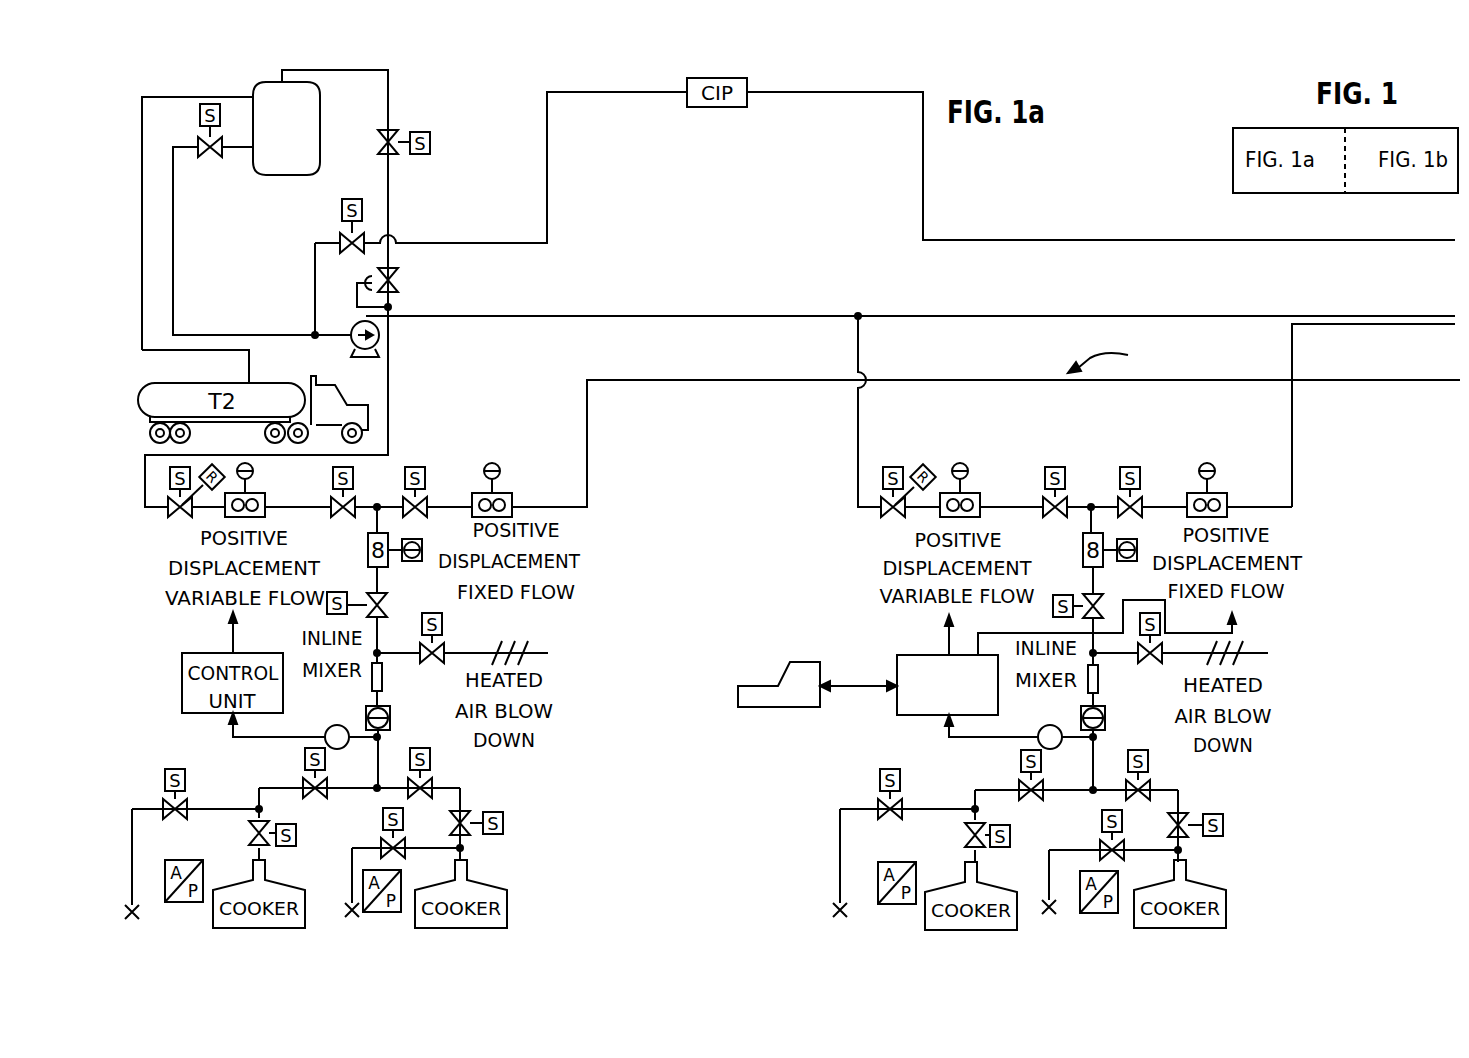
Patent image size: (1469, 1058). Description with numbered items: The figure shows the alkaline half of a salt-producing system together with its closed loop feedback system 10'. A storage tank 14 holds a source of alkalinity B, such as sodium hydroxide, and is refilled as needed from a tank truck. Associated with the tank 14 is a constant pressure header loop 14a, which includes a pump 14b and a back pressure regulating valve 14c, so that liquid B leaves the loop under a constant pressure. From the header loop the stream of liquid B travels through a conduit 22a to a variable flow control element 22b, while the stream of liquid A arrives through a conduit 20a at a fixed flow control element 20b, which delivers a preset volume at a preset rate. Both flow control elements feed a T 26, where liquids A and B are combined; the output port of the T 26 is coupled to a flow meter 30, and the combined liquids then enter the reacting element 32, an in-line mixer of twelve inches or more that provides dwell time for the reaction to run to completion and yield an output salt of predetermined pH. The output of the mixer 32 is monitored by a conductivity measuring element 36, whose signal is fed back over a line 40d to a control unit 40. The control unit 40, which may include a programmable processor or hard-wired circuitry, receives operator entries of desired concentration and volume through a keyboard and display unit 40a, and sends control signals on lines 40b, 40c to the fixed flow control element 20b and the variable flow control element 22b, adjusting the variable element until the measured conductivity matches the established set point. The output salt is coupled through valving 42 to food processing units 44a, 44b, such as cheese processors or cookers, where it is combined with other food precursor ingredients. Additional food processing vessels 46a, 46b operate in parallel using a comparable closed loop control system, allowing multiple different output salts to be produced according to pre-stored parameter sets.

The tank 14 is at (262, 92).
The constant pressure header loop 14a is at (432, 178).
The pump 14b is at (348, 324).
The back pressure regulating valve 14c is at (396, 298).
The conduit 22a is at (858, 344).
The variable flow control element 22b is at (947, 490).
The T 26 is at (1091, 505).
The flow meter 30 is at (1080, 555).
The conduit 20a is at (1292, 360).
The fixed flow control element 20b is at (1215, 492).
The closed loop feedback system 10' is at (1113, 356).
The reacting element 32 is at (1100, 682).
The conductivity measuring element 36 is at (1038, 745).
The control unit 40 is at (896, 708).
The keyboard and display unit 40a is at (782, 683).
The line 40b is at (1232, 633).
The line 40c is at (945, 655).
The line 40d is at (947, 738).
The valving 42 is at (1162, 790).
The food processing unit 44a is at (1003, 887).
The food processing unit 44b is at (1210, 885).
The food processing vessel 46a is at (292, 885).
The food processing vessel 46b is at (495, 885).